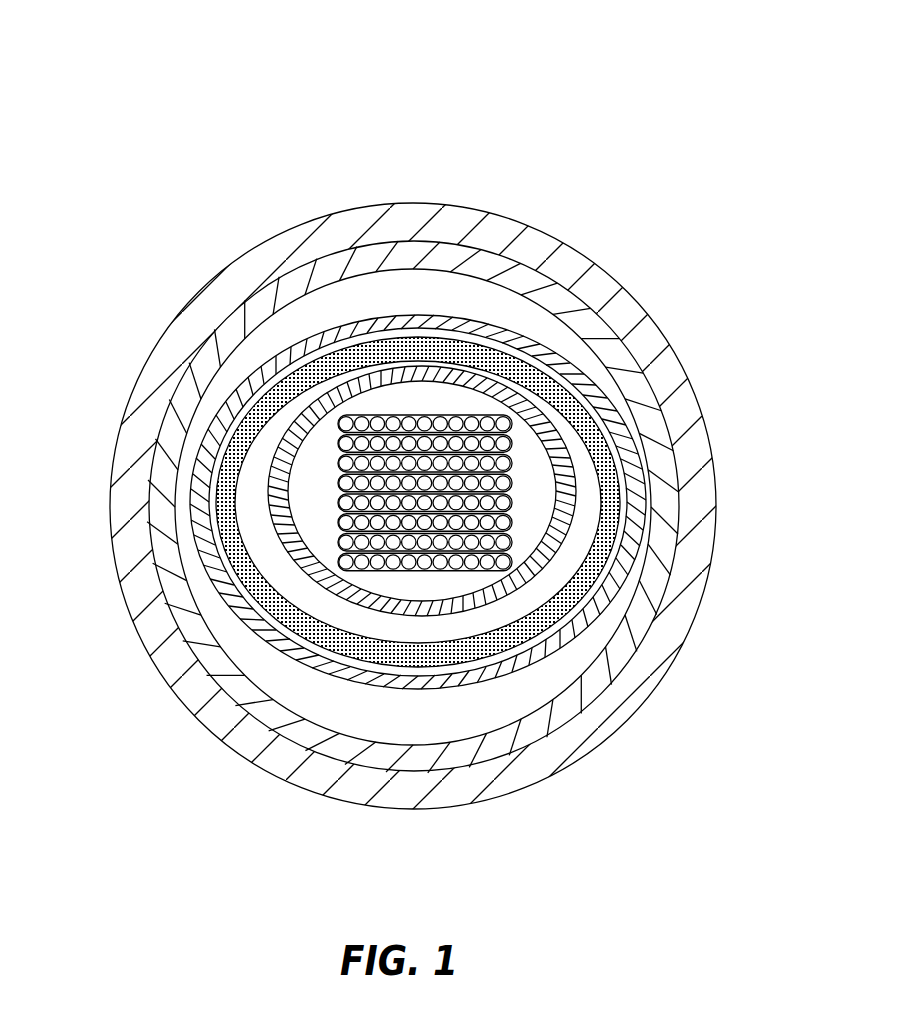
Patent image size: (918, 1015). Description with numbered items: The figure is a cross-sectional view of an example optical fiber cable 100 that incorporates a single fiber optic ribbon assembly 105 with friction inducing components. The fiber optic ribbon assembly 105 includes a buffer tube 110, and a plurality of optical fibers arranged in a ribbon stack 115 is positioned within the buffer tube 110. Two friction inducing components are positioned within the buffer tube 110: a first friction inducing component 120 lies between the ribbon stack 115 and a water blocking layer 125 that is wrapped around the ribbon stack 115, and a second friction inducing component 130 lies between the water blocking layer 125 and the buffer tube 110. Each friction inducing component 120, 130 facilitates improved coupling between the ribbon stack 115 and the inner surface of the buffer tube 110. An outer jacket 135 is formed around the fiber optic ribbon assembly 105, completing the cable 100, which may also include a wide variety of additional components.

The optical fiber cable 100 is at (128, 61).
The fiber optic ribbon assembly 105 is at (442, 246).
The buffer tube 110 is at (598, 298).
The ribbon stack 115 is at (532, 493).
The first friction inducing component 120 is at (571, 546).
The water blocking layer 125 is at (240, 413).
The second friction inducing component 130 is at (600, 379).
The outer jacket 135 is at (517, 212).